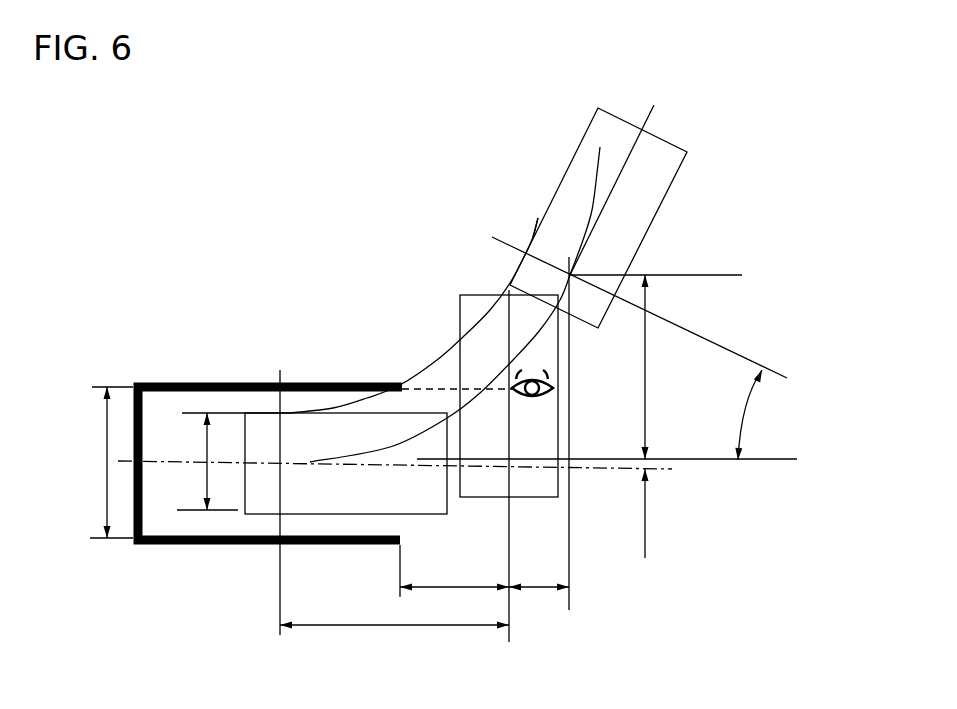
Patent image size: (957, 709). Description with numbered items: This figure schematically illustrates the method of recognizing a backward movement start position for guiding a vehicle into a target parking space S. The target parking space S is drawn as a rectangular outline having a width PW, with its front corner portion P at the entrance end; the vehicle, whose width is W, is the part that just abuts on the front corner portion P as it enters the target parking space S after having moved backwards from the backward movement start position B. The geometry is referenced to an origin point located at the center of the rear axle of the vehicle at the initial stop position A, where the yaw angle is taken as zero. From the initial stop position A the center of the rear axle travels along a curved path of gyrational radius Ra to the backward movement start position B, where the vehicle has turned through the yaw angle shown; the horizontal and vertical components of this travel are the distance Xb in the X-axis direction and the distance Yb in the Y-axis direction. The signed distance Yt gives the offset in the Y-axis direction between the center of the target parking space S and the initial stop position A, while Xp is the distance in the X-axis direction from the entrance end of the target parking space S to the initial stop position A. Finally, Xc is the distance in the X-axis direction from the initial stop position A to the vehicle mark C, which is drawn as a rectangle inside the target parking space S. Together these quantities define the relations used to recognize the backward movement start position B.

The target parking space S is at (213, 360).
The front corner portion P is at (392, 372).
The initial stop position A is at (461, 316).
The backward movement start position B is at (672, 183).
The vehicle mark C is at (257, 514).
The gyrational radius Ra is at (590, 177).
The width of the target parking space PW is at (96, 462).
The width of the vehicle W is at (205, 461).
The distance from entrance end to initial stop position Xp is at (454, 571).
The distance from initial stop position to backward movement start position in X-axi Xb is at (539, 576).
The distance from initial stop position to vehicle mark Xc is at (394, 615).
The distance from initial stop position to backward movement start position in Y-axi Yb is at (607, 367).
The signed distance from parking space center to initial stop position Yt is at (660, 513).